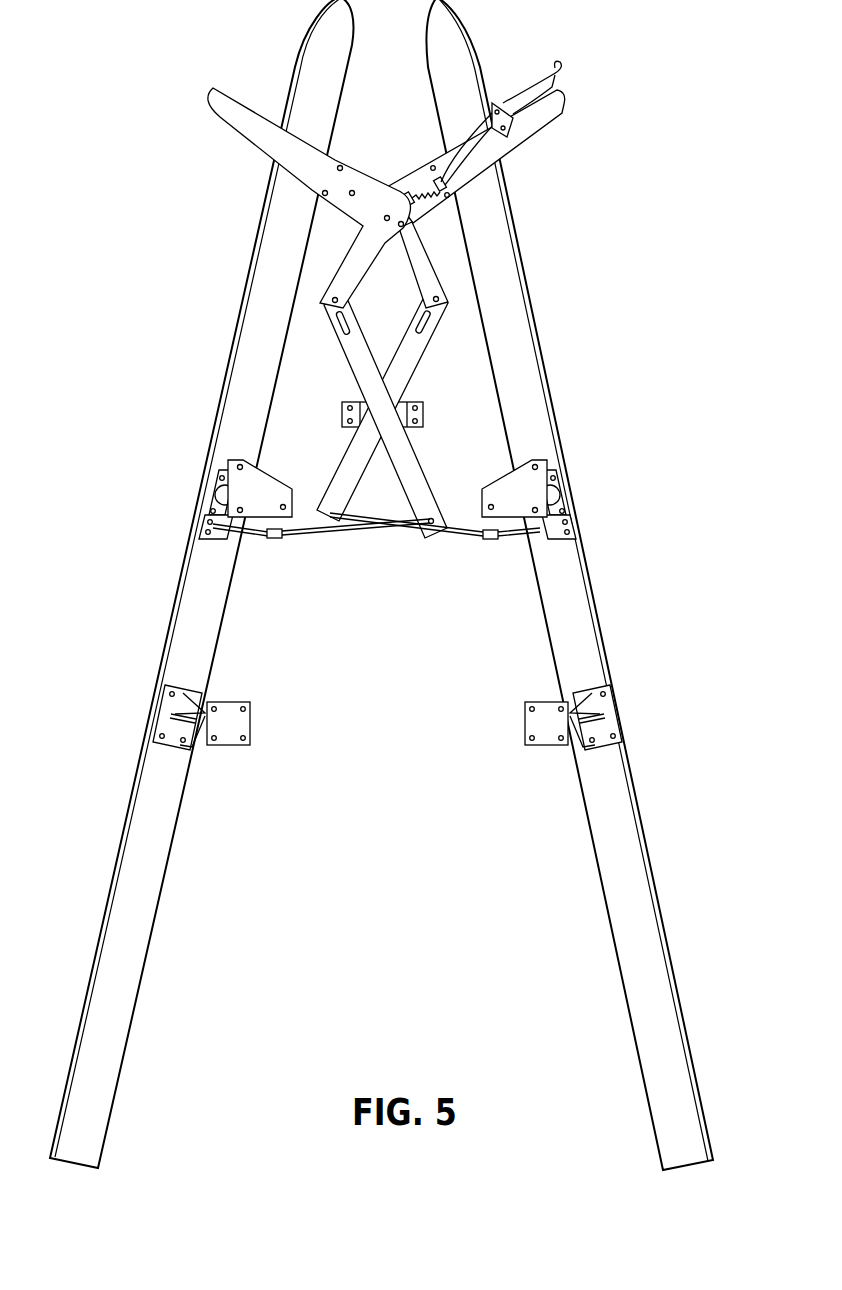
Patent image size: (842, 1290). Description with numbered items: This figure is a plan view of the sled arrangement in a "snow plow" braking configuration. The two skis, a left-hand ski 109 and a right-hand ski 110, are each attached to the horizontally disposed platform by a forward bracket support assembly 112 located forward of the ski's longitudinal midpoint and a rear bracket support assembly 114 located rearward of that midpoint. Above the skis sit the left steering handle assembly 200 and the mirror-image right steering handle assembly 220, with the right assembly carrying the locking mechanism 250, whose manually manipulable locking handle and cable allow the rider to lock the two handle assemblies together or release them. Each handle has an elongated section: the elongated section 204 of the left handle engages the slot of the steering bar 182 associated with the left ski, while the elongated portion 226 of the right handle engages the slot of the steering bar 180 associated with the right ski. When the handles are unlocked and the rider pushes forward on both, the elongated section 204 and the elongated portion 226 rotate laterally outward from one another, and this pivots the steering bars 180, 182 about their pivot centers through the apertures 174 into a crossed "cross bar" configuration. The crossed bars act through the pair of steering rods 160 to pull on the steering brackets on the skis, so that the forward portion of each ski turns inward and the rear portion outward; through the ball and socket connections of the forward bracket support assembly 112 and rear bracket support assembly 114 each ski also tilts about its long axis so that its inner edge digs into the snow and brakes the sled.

The left-hand ski 109 is at (112, 1106).
The right-hand ski 110 is at (703, 1112).
The forward bracket support assembly 112 is at (155, 496).
The rear bracket support assembly 114 is at (120, 707).
The steering rod 160 is at (317, 543).
The aperture 174 is at (385, 414).
The steering bar 180 is at (409, 470).
The steering bar 182 is at (355, 463).
The left steering handle assembly 200 is at (208, 159).
The elongated section 204 is at (360, 270).
The right steering handle assembly 220 is at (533, 151).
The elongated portion 226 is at (430, 266).
The locking mechanism 250 is at (534, 66).